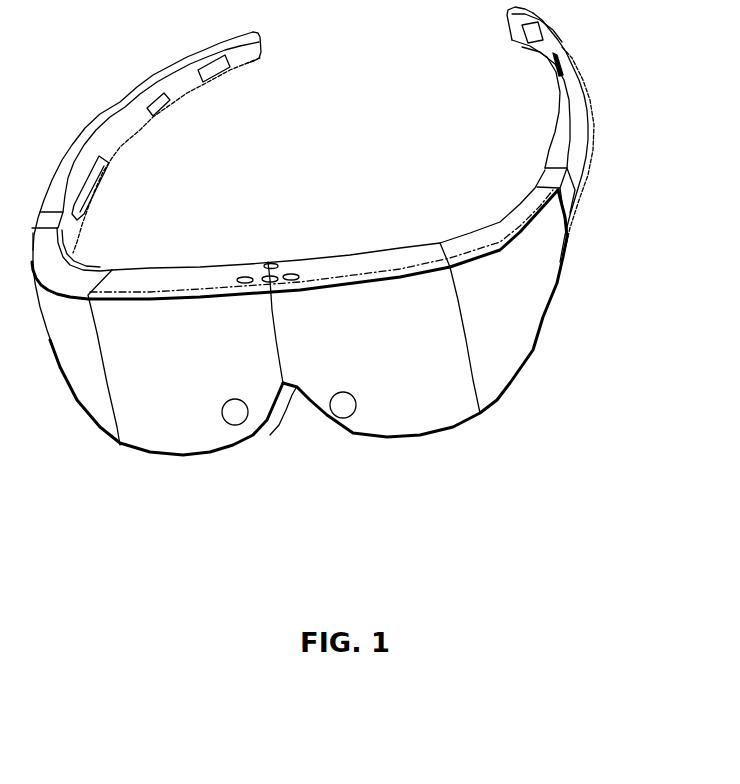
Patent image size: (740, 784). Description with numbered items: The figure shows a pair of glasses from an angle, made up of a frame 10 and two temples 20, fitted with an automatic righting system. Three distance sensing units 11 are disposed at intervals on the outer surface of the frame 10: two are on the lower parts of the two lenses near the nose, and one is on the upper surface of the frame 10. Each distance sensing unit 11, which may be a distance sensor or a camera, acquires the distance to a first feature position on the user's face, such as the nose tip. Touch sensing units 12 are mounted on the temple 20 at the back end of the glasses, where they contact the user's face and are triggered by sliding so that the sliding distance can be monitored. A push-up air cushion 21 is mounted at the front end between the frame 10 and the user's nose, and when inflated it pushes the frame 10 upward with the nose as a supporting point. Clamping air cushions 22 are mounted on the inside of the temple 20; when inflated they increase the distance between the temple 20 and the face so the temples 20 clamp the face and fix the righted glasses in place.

The frame 10 is at (303, 327).
The distance sensing unit 11 is at (262, 243).
The touch sensing unit 12 is at (204, 101).
The temple 20 is at (92, 82).
The push-up air cushion 21 is at (294, 446).
The clamping air cushion 22 is at (119, 192).